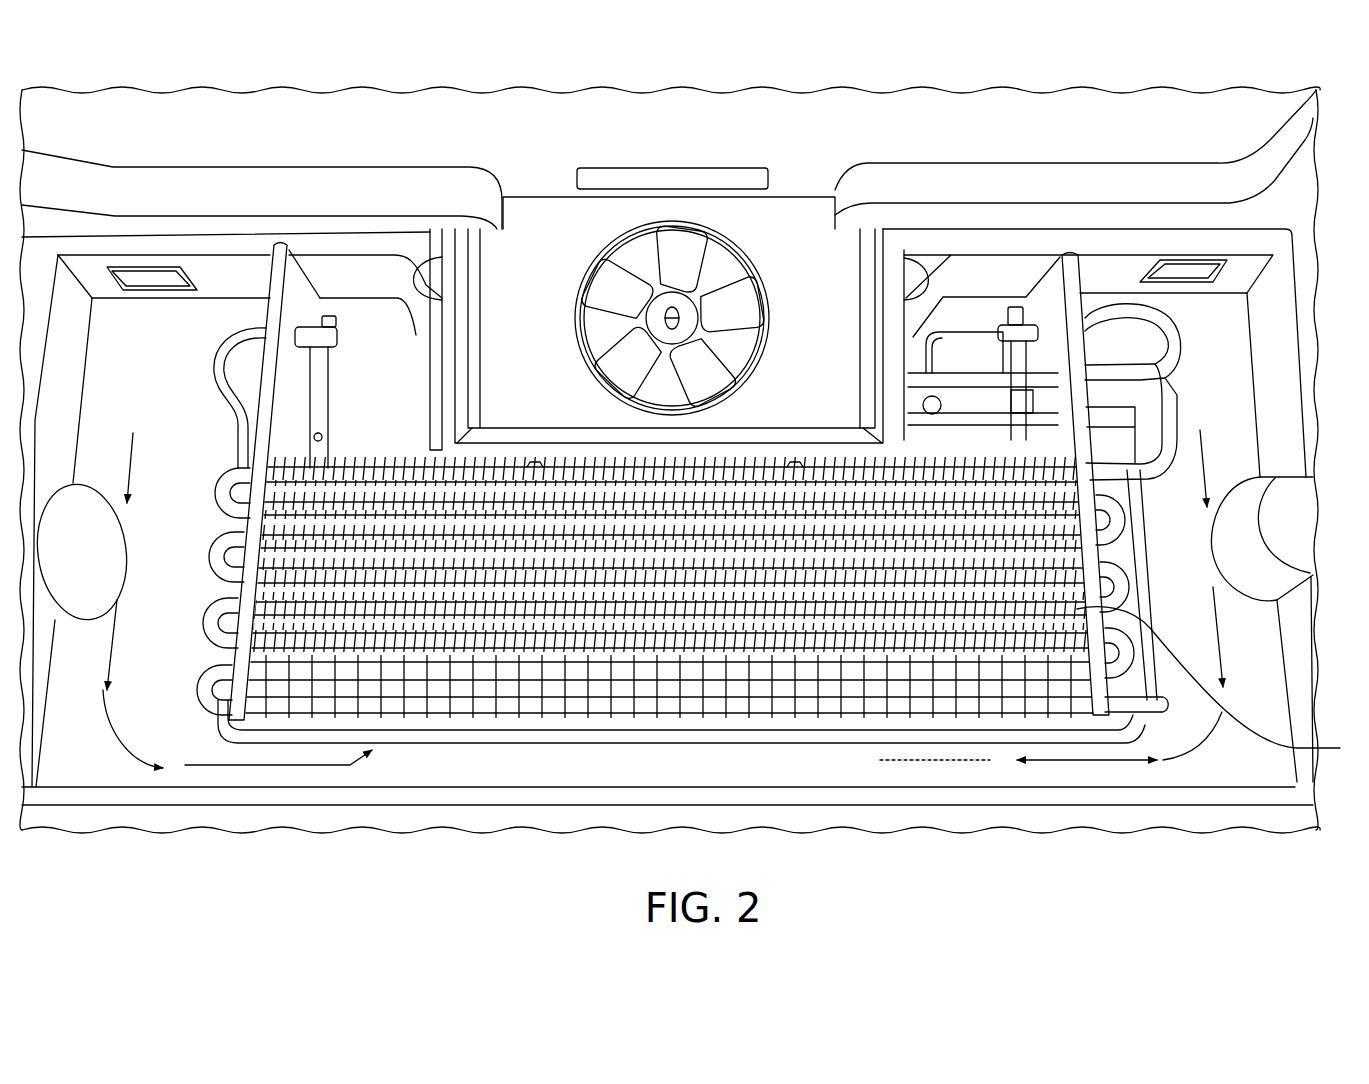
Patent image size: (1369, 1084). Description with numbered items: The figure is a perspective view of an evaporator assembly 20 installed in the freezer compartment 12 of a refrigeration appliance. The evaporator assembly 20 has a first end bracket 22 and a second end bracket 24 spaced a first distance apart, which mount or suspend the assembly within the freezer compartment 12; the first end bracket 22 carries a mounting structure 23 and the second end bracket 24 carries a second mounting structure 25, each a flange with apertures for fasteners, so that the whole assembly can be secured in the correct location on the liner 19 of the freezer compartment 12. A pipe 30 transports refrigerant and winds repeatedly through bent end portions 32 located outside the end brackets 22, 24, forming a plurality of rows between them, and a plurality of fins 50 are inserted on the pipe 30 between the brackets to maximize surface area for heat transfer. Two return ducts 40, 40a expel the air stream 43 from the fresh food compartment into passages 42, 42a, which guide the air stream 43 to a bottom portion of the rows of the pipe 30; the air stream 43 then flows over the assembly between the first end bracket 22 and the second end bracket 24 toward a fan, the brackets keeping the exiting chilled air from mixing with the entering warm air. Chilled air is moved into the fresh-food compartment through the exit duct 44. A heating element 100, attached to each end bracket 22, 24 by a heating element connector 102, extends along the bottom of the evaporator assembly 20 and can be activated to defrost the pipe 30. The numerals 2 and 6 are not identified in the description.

The fan 2 is at (588, 266).
The cable 6 is at (1220, 683).
The freezer compartment 12 is at (90, 767).
The liner 19 is at (232, 270).
The evaporator assembly 20 is at (278, 230).
The first end bracket 22 is at (300, 400).
The mounting structure 23 is at (323, 372).
The second end bracket 24 is at (1023, 394).
The second mounting structure 25 is at (1010, 350).
The pipe 30 is at (1163, 410).
The bent end portions 32 is at (215, 465).
The return duct 40 is at (152, 277).
The return duct 40a is at (1193, 362).
The passage 42 is at (86, 661).
The passage 42a is at (1275, 666).
The air stream 43 is at (105, 722).
The exit duct 44 is at (650, 167).
The fins 50 is at (535, 683).
The heating element 100 is at (205, 377).
The heating element connector 102 is at (412, 352).